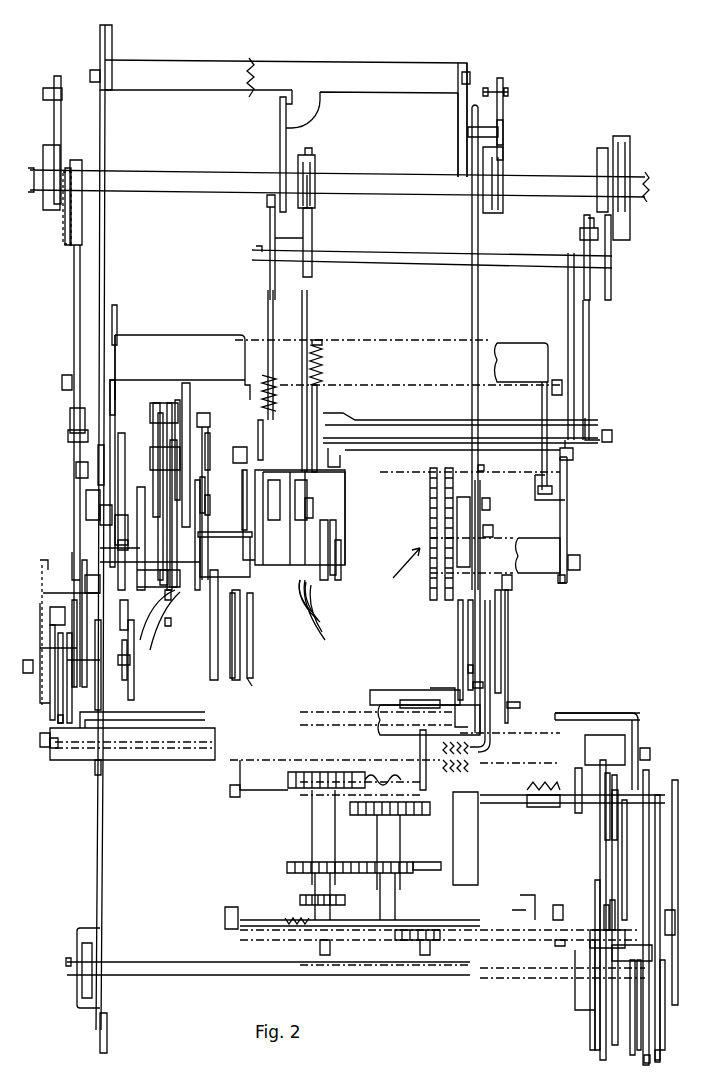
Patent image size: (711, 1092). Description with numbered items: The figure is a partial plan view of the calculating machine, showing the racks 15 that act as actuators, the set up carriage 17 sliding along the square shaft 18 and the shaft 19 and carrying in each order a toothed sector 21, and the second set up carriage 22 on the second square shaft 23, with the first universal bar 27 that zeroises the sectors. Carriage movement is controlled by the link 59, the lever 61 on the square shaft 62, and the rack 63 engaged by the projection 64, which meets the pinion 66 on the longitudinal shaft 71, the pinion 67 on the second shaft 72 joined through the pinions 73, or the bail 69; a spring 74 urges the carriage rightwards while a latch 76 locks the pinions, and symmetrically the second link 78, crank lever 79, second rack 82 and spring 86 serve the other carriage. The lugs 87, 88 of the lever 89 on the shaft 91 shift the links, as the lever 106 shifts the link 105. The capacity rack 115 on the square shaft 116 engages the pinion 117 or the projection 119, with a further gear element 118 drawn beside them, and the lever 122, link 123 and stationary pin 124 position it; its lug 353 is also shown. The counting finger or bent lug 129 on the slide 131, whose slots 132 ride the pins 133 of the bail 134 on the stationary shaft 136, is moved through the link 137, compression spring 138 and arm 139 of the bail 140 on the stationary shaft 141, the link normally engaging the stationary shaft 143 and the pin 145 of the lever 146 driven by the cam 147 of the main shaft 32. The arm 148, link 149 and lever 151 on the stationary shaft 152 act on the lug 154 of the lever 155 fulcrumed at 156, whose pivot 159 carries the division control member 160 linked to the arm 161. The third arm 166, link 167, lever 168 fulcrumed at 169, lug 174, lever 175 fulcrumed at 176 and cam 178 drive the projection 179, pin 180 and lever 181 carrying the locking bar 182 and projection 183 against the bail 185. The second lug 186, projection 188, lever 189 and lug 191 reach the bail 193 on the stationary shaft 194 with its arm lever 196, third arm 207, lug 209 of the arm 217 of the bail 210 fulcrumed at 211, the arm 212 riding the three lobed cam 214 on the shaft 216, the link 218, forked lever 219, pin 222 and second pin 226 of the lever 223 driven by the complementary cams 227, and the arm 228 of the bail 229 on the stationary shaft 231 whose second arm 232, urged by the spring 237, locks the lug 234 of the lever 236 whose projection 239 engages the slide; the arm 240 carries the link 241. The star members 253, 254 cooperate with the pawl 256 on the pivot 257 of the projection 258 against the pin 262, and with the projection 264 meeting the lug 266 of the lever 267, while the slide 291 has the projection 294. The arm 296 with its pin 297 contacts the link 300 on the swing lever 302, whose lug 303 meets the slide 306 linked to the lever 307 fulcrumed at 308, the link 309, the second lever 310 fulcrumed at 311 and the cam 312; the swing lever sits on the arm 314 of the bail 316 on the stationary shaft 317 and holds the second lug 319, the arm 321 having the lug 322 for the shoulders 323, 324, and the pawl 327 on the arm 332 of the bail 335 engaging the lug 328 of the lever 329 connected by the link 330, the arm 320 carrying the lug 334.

The racks 15 is at (259, 685).
The set up carriage 17 is at (423, 543).
The square shaft 18 is at (520, 705).
The shaft 19 is at (486, 532).
The toothed sector 21 is at (430, 486).
The second set up carriage 22 is at (438, 712).
The second square shaft 23 is at (406, 700).
The first universal bar 27 is at (450, 486).
The main shaft 32 is at (42, 170).
The link 59 is at (596, 1028).
The lever 61 is at (605, 820).
The square shaft 62 is at (230, 791).
The rack 63 is at (285, 779).
The projection 64 is at (420, 757).
The pinion 66 is at (348, 772).
The pinion 67 is at (360, 815).
The bail 69 is at (472, 839).
The longitudinal shaft 71 is at (312, 820).
The second shaft 72 is at (398, 842).
The pinions 73 is at (352, 857).
The spring 74 is at (468, 767).
The latch 76 is at (435, 861).
The second link 78 is at (645, 1059).
The crank lever 79 is at (649, 791).
The second rack 82 is at (528, 799).
The spring 86 is at (440, 746).
The lug 87 is at (632, 1000).
The lug 88 is at (638, 1025).
The lever 89 is at (662, 1005).
The shaft 91 is at (68, 962).
The link 105 is at (592, 1046).
The lever 106 is at (78, 990).
The capacity rack 115 is at (440, 926).
The square shaft 116 is at (225, 913).
The pinion 117 is at (380, 941).
The gear 118 is at (345, 898).
The projection 119 is at (520, 918).
The lever 122 is at (672, 905).
The link 123 is at (658, 1052).
The stationary pin 124 is at (660, 810).
The bent lug 129 is at (345, 480).
The slide 131 is at (323, 531).
The slots 132 is at (331, 551).
The pins 133 is at (300, 493).
The bail 134 is at (340, 462).
The stationary shaft 136 is at (350, 577).
The link 137 is at (273, 321).
The compression spring 138 is at (265, 378).
The arm 139 is at (280, 157).
The bail 140 is at (286, 105).
The stationary shaft 141 is at (95, 68).
The stationary shaft 143 is at (258, 260).
The pin 145 is at (270, 244).
The lever 146 is at (313, 217).
The cam 147 is at (311, 231).
The arm 148 is at (112, 50).
The link 149 is at (105, 142).
The lever 151 is at (42, 600).
The stationary shaft 152 is at (86, 496).
The lug 154 is at (88, 585).
The lever 155 is at (113, 690).
The fulcrum 156 is at (28, 668).
The pivot 159 is at (135, 681).
The division control member 160 is at (104, 783).
The arm 161 is at (107, 1030).
The third arm 166 is at (462, 140).
The link 167 is at (478, 307).
The lever 168 is at (484, 468).
The fulcrum 169 is at (484, 498).
The lug 174 is at (490, 131).
The lever 175 is at (503, 120).
The fulcrum 176 is at (503, 86).
The cam 178 is at (496, 153).
The projection 179 is at (495, 650).
The pin 180 is at (468, 668).
The lever 181 is at (483, 690).
The locking bar 182 is at (476, 630).
The projection 183 is at (470, 748).
The bail 185 is at (490, 748).
The second lug 186 is at (115, 529).
The projection 188 is at (120, 546).
The lever 189 is at (105, 516).
The lug 191 is at (100, 460).
The bail 193 is at (525, 346).
The stationary shaft 194 is at (562, 386).
The arm lever 196 is at (112, 324).
The third arm 207 is at (553, 500).
The lug 209 is at (568, 492).
The bail 210 is at (545, 575).
The fulcrum 211 is at (580, 560).
The arm 212 is at (217, 493).
The three lobed cam 214 is at (208, 414).
The shaft 216 is at (212, 445).
The arm 217 is at (567, 522).
The link 218 is at (589, 393).
The forked lever 219 is at (574, 346).
The pin 222 is at (580, 234).
The lever 223 is at (611, 250).
The second pin 226 is at (592, 300).
The complementary cams 227 is at (604, 148).
The arm 228 is at (575, 470).
The bail 229 is at (598, 448).
The stationary shaft 231 is at (604, 433).
The second arm 232 is at (318, 396).
The lug 234 is at (318, 620).
The lever 236 is at (312, 612).
The spring 237 is at (325, 366).
The projection 239 is at (315, 508).
The arm 240 is at (219, 503).
The link 241 is at (238, 610).
The star member 253 is at (162, 400).
The star member 254 is at (173, 396).
The pawl 256 is at (152, 450).
The pivot 257 is at (166, 601).
The projection 258 is at (190, 400).
The pin 262 is at (152, 410).
The projection 264 is at (160, 586).
The lug 266 is at (168, 626).
The lever 267 is at (135, 650).
The slide 291 is at (130, 666).
The projection 294 is at (140, 696).
The arm 296 is at (112, 400).
The pin 297 is at (78, 470).
The link 300 is at (68, 440).
The swing lever 302 is at (72, 650).
The lug 303 is at (70, 416).
The slide 306 is at (74, 265).
The lever 307 is at (66, 243).
The fulcrum 308 is at (81, 192).
The link 309 is at (63, 224).
The second lever 310 is at (62, 135).
The fulcrum 311 is at (50, 88).
The cam 312 is at (48, 145).
The arm 314 is at (62, 636).
The bail 316 is at (166, 761).
The stationary shaft 317 is at (45, 747).
The second lug 319 is at (72, 561).
The arm 320 is at (600, 849).
The arm 321 is at (53, 748).
The lug 322 is at (605, 913).
The shoulder 323 is at (610, 901).
The shoulder 324 is at (596, 931).
The pawl 327 is at (58, 723).
The lug 328 is at (50, 616).
The lever 329 is at (44, 703).
The link 330 is at (44, 568).
The arm 332 is at (85, 773).
The lug 334 is at (622, 881).
The bail 335 is at (200, 714).
The lug 353 is at (555, 943).